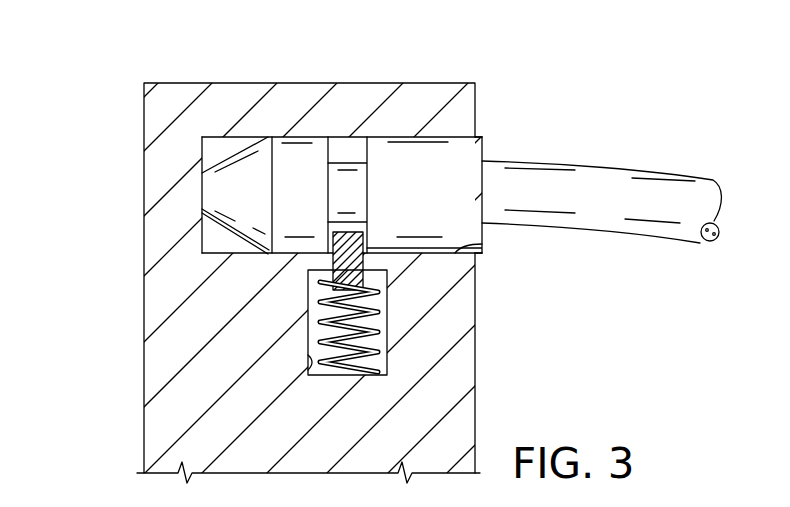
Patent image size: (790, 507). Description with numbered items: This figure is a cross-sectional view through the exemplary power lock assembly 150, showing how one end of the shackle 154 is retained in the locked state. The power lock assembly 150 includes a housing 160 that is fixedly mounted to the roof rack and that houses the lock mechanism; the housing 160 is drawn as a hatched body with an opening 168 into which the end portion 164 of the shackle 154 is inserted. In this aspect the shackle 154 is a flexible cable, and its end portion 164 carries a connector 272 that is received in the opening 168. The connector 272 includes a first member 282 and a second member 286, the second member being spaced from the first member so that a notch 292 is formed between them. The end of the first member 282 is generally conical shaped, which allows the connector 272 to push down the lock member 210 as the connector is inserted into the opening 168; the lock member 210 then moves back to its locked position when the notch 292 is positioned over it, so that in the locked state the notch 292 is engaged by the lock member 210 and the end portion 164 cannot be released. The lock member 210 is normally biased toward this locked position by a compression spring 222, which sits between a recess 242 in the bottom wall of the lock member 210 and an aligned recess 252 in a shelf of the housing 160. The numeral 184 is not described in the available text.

The power lock assembly 150 is at (132, 135).
The shackle 154 is at (623, 162).
The housing 160 is at (430, 92).
The end portion 164 is at (244, 137).
The opening 168 is at (483, 245).
The connector 184 is at (55, 7).
The lock member 210 is at (365, 240).
The compression spring 222 is at (340, 332).
The recess 242 is at (375, 287).
The recess 252 is at (308, 360).
The connector 272 is at (485, 137).
The first member 282 is at (303, 152).
The second member 286 is at (407, 155).
The notch 292 is at (352, 152).